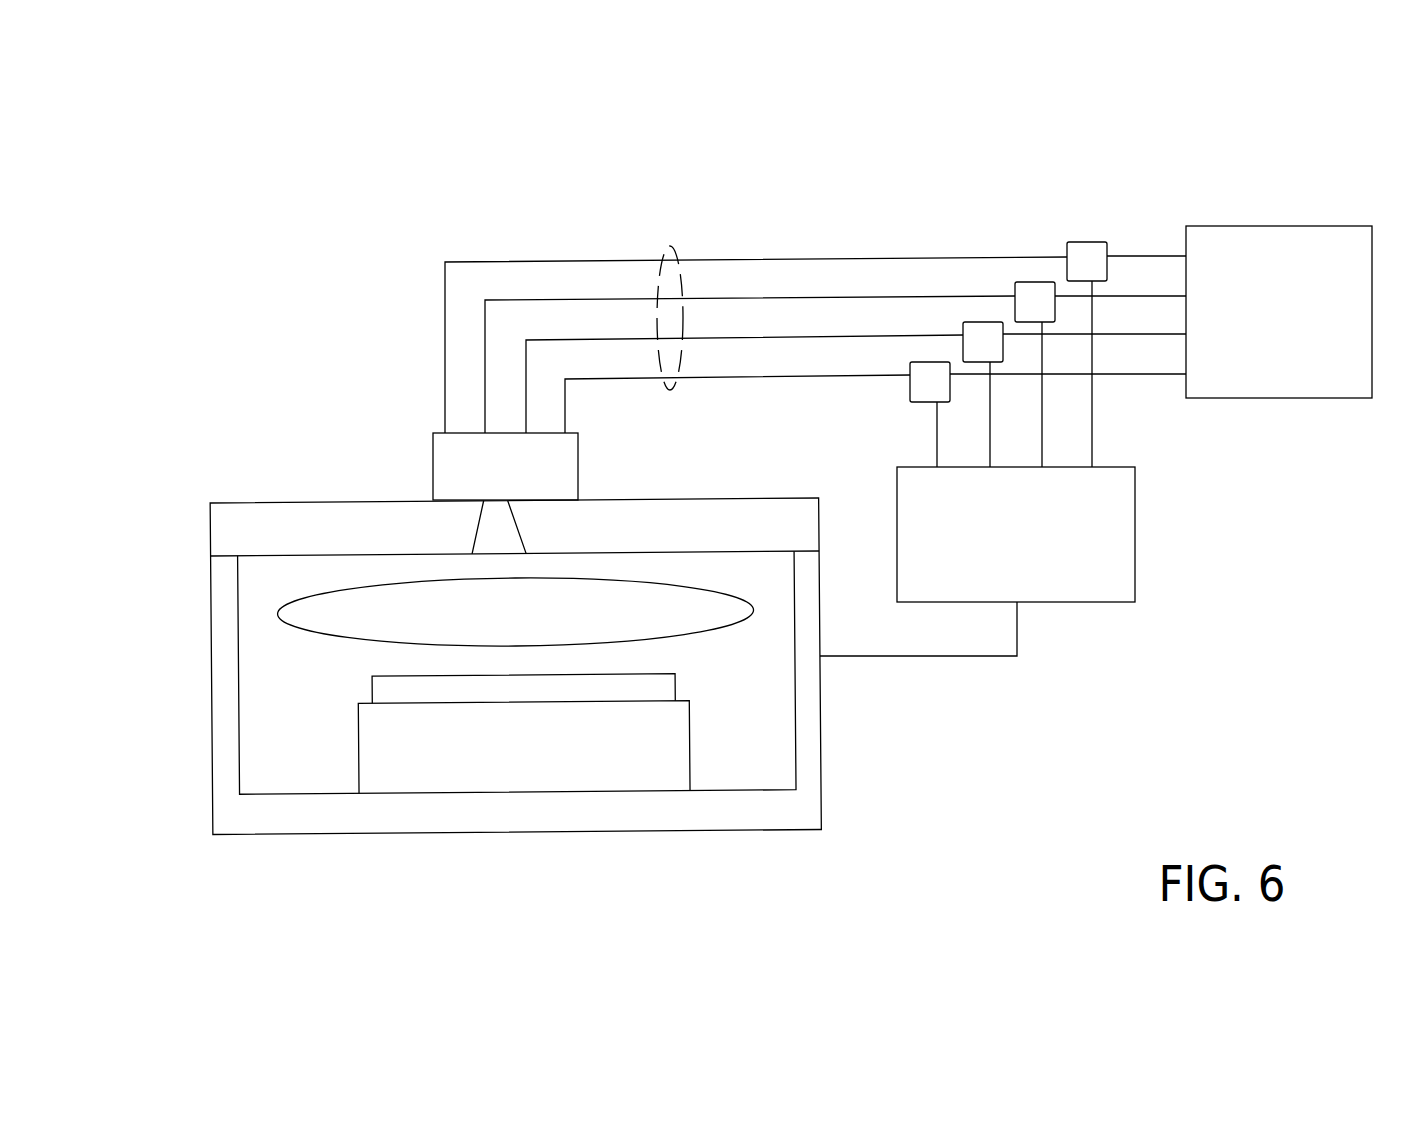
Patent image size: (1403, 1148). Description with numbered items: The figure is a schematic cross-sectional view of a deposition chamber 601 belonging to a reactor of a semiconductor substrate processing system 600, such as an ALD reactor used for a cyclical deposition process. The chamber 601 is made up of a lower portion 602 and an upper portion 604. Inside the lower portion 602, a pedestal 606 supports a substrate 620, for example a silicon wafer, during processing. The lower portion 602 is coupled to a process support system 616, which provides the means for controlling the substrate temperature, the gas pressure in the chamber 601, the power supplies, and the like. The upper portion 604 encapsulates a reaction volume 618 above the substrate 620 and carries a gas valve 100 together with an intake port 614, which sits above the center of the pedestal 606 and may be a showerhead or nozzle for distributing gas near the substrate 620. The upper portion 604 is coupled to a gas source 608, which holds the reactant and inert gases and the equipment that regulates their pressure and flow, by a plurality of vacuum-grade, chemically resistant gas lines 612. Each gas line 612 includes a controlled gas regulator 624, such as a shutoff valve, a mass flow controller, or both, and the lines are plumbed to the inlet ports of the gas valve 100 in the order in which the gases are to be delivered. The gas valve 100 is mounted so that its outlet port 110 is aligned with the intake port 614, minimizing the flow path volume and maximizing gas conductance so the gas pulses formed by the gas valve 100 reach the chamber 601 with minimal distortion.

The semiconductor substrate processing system 600 is at (1220, 112).
The deposition chamber 601 is at (784, 879).
The lower portion 602 is at (392, 832).
The upper portion 604 is at (333, 500).
The pedestal 606 is at (358, 742).
The gas source 608 is at (1354, 226).
The gas lines 612 is at (670, 247).
The intake port 614 is at (523, 532).
The process support system 616 is at (1135, 519).
The reaction volume 618 is at (490, 628).
The substrate 620 is at (372, 686).
The controlled gas regulator 624 is at (930, 362).
The gas valve 100 is at (445, 433).
The outlet port 110 is at (500, 498).